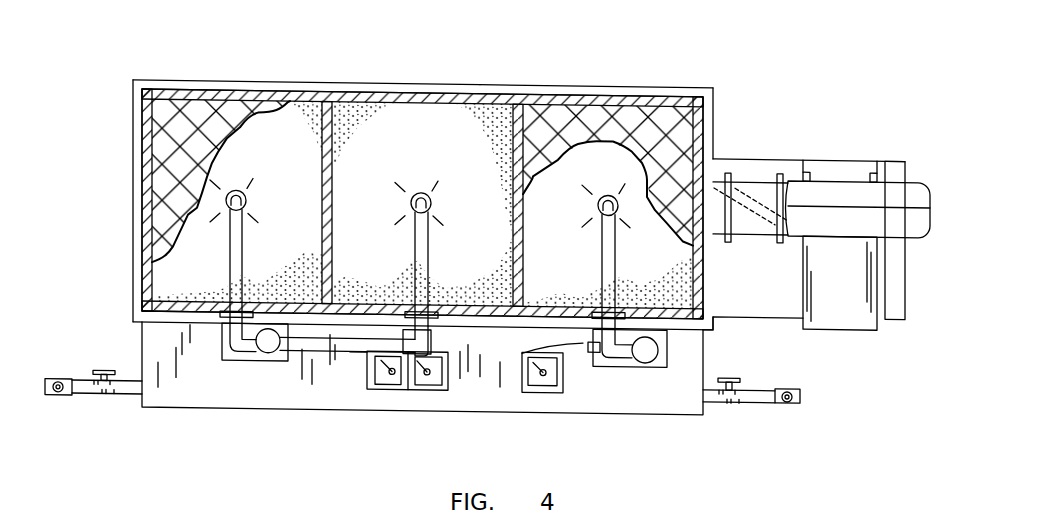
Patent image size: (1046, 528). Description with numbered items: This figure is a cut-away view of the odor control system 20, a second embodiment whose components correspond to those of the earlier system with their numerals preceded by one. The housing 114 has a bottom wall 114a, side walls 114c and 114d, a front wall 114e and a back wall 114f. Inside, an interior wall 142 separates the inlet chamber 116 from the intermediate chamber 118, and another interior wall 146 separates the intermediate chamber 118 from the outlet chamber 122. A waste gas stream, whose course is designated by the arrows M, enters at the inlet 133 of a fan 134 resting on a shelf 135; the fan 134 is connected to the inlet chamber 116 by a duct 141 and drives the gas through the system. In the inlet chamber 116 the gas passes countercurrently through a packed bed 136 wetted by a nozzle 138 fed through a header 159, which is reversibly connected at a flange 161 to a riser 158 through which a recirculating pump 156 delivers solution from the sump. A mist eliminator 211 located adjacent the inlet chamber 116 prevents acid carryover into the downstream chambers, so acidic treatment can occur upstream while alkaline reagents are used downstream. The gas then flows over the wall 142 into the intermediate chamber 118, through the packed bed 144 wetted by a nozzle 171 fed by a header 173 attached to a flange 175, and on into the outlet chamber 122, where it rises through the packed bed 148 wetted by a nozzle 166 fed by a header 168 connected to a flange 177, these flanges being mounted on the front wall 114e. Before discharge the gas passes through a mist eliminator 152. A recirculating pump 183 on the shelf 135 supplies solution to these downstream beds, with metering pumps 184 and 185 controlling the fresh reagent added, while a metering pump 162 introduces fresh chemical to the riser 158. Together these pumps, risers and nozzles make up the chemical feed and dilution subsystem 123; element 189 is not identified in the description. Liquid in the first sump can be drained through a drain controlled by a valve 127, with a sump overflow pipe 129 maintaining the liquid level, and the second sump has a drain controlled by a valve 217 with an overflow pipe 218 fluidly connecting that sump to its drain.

The odor control system 20 is at (489, 235).
The housing 114 is at (189, 79).
The bottom wall 114a is at (678, 88).
The side wall 114c is at (715, 113).
The side wall 114d is at (132, 205).
The front wall 114e is at (130, 323).
The back wall 114f is at (488, 95).
The inlet chamber 116 is at (713, 88).
The intermediate chamber 118 is at (365, 77).
The outlet chamber 122 is at (137, 111).
The mist eliminator 152 is at (200, 147).
The interior wall 146 is at (320, 126).
The packed bed 148 is at (297, 100).
The packed bed 144 is at (438, 173).
The interior wall 142 is at (530, 116).
The mist eliminator 211 is at (600, 120).
The packed bed 136 is at (623, 175).
The nozzle 166 is at (247, 198).
The header 168 is at (245, 240).
The flange 177 is at (215, 314).
The recirculating pump 183 is at (263, 355).
The gas line 189 is at (317, 353).
The nozzle 171 is at (438, 195).
The header 173 is at (431, 248).
The flange 175 is at (435, 318).
The nozzle 138 is at (597, 202).
The header 159 is at (602, 253).
The flange 161 is at (593, 320).
The recirculating pump 156 is at (643, 367).
The riser 158 is at (590, 348).
The metering pump 184 is at (383, 391).
The metering pump 185 is at (427, 391).
The metering pump 162 is at (543, 393).
The chemical feed and dilution subsystem 123 is at (691, 361).
The shelf 135 is at (207, 397).
The valve 217 is at (107, 368).
The overflow pipe 218 is at (130, 395).
The valve 127 is at (733, 380).
The sump overflow pipe 129 is at (757, 402).
The duct 141 is at (738, 233).
The gas stream course arrows M is at (843, 162).
The inlet 133 is at (833, 170).
The fan 134 is at (880, 180).